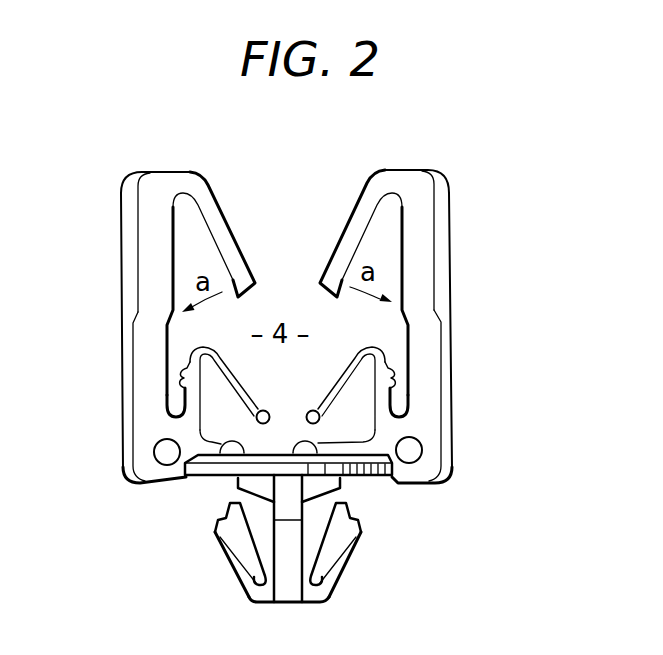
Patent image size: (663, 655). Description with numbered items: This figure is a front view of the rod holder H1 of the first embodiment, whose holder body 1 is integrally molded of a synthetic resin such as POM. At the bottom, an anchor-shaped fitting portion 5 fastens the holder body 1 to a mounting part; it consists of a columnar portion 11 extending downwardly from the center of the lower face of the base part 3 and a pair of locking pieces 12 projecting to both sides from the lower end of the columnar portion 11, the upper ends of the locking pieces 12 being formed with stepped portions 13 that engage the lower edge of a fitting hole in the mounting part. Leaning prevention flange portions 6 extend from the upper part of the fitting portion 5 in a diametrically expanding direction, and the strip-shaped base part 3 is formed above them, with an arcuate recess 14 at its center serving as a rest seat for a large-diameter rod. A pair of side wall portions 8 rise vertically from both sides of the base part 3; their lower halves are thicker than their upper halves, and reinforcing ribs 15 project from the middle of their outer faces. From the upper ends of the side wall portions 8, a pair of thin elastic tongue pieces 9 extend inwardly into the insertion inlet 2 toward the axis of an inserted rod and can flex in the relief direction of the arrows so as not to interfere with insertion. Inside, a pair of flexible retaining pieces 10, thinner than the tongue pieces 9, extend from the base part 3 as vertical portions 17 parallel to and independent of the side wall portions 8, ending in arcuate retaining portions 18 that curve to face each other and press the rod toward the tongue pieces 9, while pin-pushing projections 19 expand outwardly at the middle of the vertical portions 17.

The holder body 1 is at (470, 343).
The insertion inlet 2 is at (284, 228).
The base part 3 is at (235, 477).
The fitting portion 5 is at (232, 608).
The leaning prevention flange portions 6 is at (398, 468).
The side wall portions 8 is at (150, 372).
The tongue pieces 9 is at (227, 256).
The flexible retaining pieces 10 is at (170, 408).
The columnar portion 11 is at (290, 583).
The locking pieces 12 is at (240, 550).
The stepped portions 13 is at (222, 517).
The arcuate recess 14 is at (301, 438).
The reinforcing ribs 15 is at (128, 251).
The vertical portions 17 is at (183, 362).
The arcuate retaining portions 18 is at (245, 402).
The pin-pushing projections 19 is at (182, 380).
The rod holder H1 is at (466, 242).